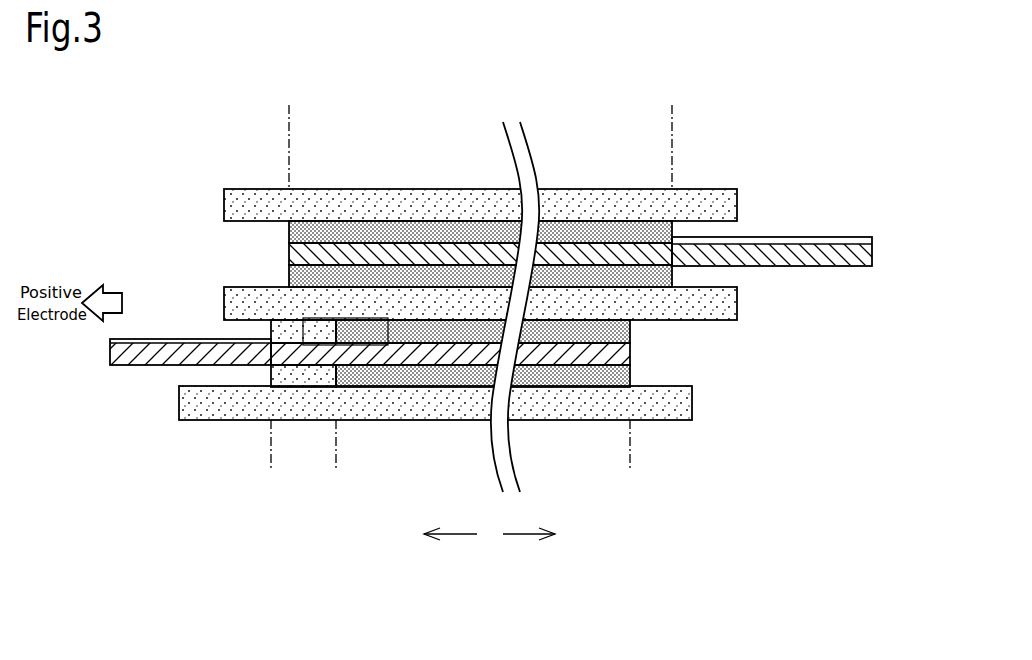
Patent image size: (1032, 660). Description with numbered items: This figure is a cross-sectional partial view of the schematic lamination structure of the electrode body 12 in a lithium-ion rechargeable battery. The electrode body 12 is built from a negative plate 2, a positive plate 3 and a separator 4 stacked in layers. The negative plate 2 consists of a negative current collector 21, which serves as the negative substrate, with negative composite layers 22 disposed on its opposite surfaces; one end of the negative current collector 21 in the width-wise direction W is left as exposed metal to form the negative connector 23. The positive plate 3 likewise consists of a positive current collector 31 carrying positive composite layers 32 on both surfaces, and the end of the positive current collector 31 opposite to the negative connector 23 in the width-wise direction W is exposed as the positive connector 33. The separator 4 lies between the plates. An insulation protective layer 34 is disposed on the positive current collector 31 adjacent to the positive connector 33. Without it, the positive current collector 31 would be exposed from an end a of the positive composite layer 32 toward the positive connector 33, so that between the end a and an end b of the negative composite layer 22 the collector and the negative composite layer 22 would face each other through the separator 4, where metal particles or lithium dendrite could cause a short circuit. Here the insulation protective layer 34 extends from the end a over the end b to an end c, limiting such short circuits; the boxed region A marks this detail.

The electrode body 12 is at (522, 312).
The separator 4 is at (737, 197).
The negative plate 2 is at (501, 243).
The negative current collector 21 is at (313, 252).
The negative composite layer 22 is at (313, 233).
The negative connector 23 is at (812, 237).
The positive plate 3 is at (451, 379).
The positive current collector 31 is at (607, 352).
The positive composite layer 32 is at (607, 331).
The positive connector 33 is at (268, 341).
The insulation protective layer 34 is at (297, 387).
The enlarged region A is at (367, 347).
The end a is at (336, 456).
The end b is at (290, 132).
The end c is at (271, 456).
The width-wise direction W is at (489, 536).